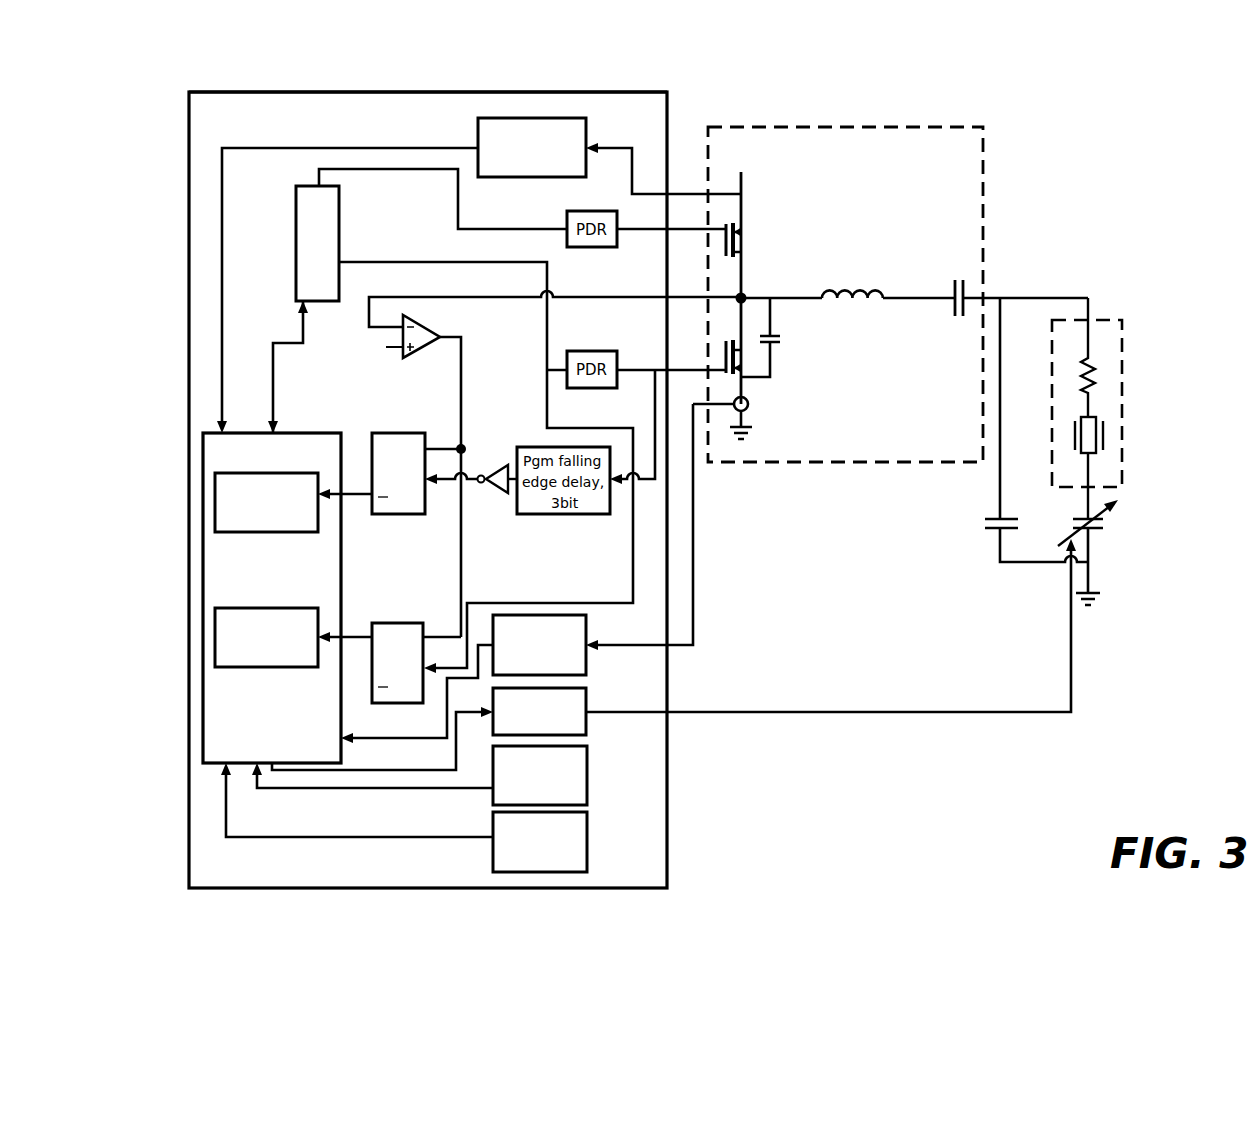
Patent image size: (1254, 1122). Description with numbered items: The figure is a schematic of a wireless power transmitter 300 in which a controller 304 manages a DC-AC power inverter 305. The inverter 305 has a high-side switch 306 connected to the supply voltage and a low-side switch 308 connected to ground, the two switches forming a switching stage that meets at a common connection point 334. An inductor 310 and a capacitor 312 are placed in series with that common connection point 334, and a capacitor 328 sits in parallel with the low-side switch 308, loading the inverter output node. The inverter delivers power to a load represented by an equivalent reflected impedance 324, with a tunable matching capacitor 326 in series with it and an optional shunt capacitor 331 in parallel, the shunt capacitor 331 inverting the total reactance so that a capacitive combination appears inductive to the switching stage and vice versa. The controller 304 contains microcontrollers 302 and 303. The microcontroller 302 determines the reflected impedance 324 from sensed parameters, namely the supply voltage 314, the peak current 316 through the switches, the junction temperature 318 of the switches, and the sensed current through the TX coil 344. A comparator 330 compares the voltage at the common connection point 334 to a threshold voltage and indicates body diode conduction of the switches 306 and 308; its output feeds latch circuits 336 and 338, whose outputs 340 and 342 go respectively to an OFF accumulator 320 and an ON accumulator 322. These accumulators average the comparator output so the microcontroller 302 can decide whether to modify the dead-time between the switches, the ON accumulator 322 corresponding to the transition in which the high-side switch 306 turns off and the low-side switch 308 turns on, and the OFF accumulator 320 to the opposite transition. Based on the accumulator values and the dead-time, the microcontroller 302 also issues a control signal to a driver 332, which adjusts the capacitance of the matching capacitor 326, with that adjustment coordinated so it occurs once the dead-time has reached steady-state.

The wireless power transmitter 300 is at (166, 74).
The microcontroller 302 is at (272, 598).
The microcontroller 303 is at (450, 421).
The controller 304 is at (468, 92).
The DC-AC power inverter 305 is at (823, 127).
The high-side switch 306 is at (744, 233).
The low-side switch 308 is at (748, 372).
The inductor 310 is at (868, 282).
The capacitor 312 is at (955, 285).
The supply voltage 314 is at (479, 275).
The peak current 316 is at (517, 573).
The junction temperature 318 is at (419, 775).
The OFF accumulator 320 is at (266, 502).
The ON accumulator 322 is at (266, 637).
The equivalent reflected impedance 324 is at (1092, 322).
The tunable matching capacitor 326 is at (1108, 527).
The capacitor 328 is at (781, 339).
The comparator 330 is at (404, 352).
The shunt capacitor 331 is at (986, 527).
The driver 332 is at (674, 654).
The common connection point 334 is at (745, 296).
The latch circuit 336 is at (416, 473).
The latch circuit 338 is at (416, 663).
The output 340 is at (350, 495).
The output 342 is at (345, 638).
The TX coil 344 is at (404, 817).